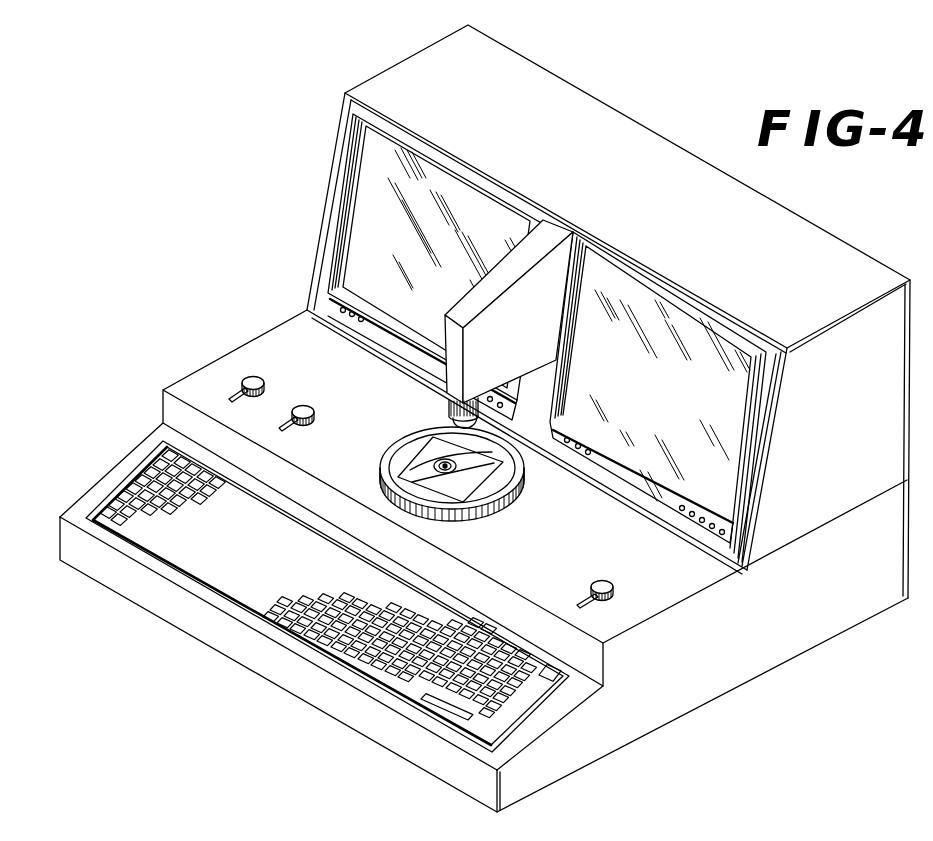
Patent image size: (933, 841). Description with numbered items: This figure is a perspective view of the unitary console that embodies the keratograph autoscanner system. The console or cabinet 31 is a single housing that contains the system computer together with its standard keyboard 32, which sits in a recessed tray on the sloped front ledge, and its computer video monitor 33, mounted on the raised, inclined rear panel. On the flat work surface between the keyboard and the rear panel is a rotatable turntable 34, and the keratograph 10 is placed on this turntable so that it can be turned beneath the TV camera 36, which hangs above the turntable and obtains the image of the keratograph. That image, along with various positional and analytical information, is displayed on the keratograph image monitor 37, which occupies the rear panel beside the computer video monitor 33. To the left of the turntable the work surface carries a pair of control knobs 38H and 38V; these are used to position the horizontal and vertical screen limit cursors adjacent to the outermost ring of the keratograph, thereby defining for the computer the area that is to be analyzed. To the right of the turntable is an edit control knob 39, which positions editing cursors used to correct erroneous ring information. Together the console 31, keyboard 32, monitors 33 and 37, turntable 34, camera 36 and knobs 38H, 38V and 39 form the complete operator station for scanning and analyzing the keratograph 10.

The keratograph 10 is at (492, 465).
The console 31 is at (388, 73).
The standard keyboard 32 is at (328, 632).
The computer video monitor 33 is at (742, 424).
The rotatable turntable 34 is at (488, 487).
The TV camera 36 is at (452, 420).
The keratograph image monitor 37 is at (362, 203).
The control knob 38H is at (255, 377).
The control knob 38V is at (306, 406).
The edit control knob 39 is at (603, 580).